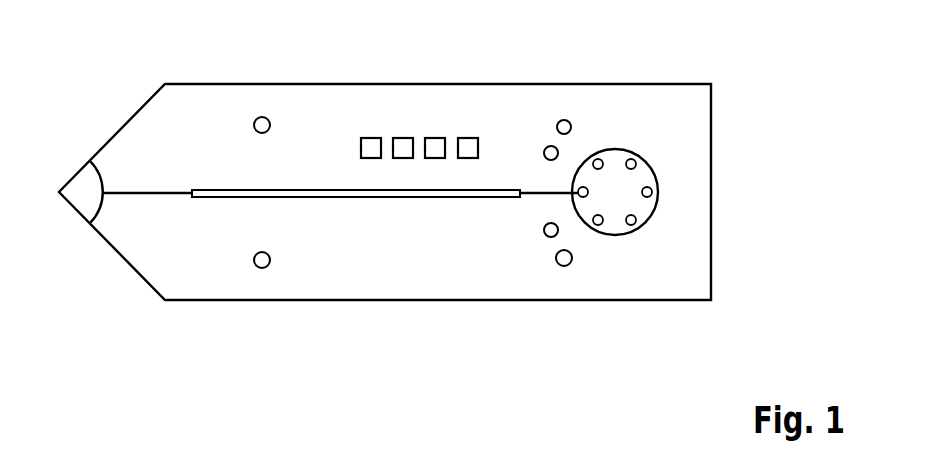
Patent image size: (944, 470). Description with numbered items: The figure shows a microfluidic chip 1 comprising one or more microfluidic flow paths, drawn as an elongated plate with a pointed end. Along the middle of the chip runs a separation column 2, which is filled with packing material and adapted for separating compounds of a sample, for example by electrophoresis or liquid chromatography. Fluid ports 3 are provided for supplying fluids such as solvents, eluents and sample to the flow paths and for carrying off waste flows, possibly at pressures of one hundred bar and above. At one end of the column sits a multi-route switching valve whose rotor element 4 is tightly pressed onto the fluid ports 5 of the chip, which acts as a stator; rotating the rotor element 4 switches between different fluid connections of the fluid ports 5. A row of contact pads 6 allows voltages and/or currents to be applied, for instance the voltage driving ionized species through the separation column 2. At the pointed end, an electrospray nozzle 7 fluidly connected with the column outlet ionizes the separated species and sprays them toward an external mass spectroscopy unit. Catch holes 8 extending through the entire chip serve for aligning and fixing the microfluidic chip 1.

The microfluidic chip 1 is at (348, 300).
The separation column 2 is at (468, 197).
The fluid ports 3 is at (551, 150).
The rotor element 4 is at (650, 192).
The fluid ports 5 is at (598, 162).
The contact pads 6 is at (468, 147).
The electrospray nozzle 7 is at (83, 195).
The catch holes 8 is at (262, 117).